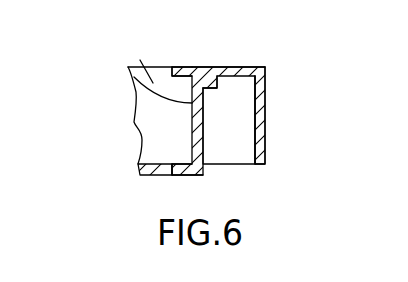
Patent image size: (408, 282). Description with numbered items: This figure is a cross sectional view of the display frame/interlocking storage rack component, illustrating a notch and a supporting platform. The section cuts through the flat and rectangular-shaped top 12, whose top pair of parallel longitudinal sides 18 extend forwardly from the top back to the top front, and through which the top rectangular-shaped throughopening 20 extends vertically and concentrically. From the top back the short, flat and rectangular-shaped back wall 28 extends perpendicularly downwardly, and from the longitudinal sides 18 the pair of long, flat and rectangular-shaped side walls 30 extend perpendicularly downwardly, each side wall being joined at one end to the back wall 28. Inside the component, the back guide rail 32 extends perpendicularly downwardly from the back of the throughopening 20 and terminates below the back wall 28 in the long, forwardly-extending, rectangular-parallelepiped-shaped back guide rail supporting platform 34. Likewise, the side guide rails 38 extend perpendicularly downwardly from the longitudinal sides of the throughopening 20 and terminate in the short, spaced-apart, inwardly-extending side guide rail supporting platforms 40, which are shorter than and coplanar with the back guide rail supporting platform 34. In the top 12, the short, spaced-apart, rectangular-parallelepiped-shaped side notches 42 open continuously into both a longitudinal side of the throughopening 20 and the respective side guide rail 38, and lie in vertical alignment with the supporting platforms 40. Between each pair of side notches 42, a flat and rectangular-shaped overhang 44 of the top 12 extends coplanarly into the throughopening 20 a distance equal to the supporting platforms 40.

The flat and rectangular-shaped top 12 is at (238, 60).
The top pair of parallel longitudinal sides 18 is at (263, 67).
The top rectangular-shaped throughopening 20 is at (140, 60).
The back wall 28 is at (236, 155).
The side walls 30 is at (266, 113).
The back guide rail 32 is at (152, 122).
The back guide rail supporting platform 34 is at (141, 173).
The side guide rails 38 is at (132, 88).
The side guide rail supporting platforms 40 is at (186, 176).
The side notches 42 is at (193, 67).
The overhangs 44 is at (153, 82).